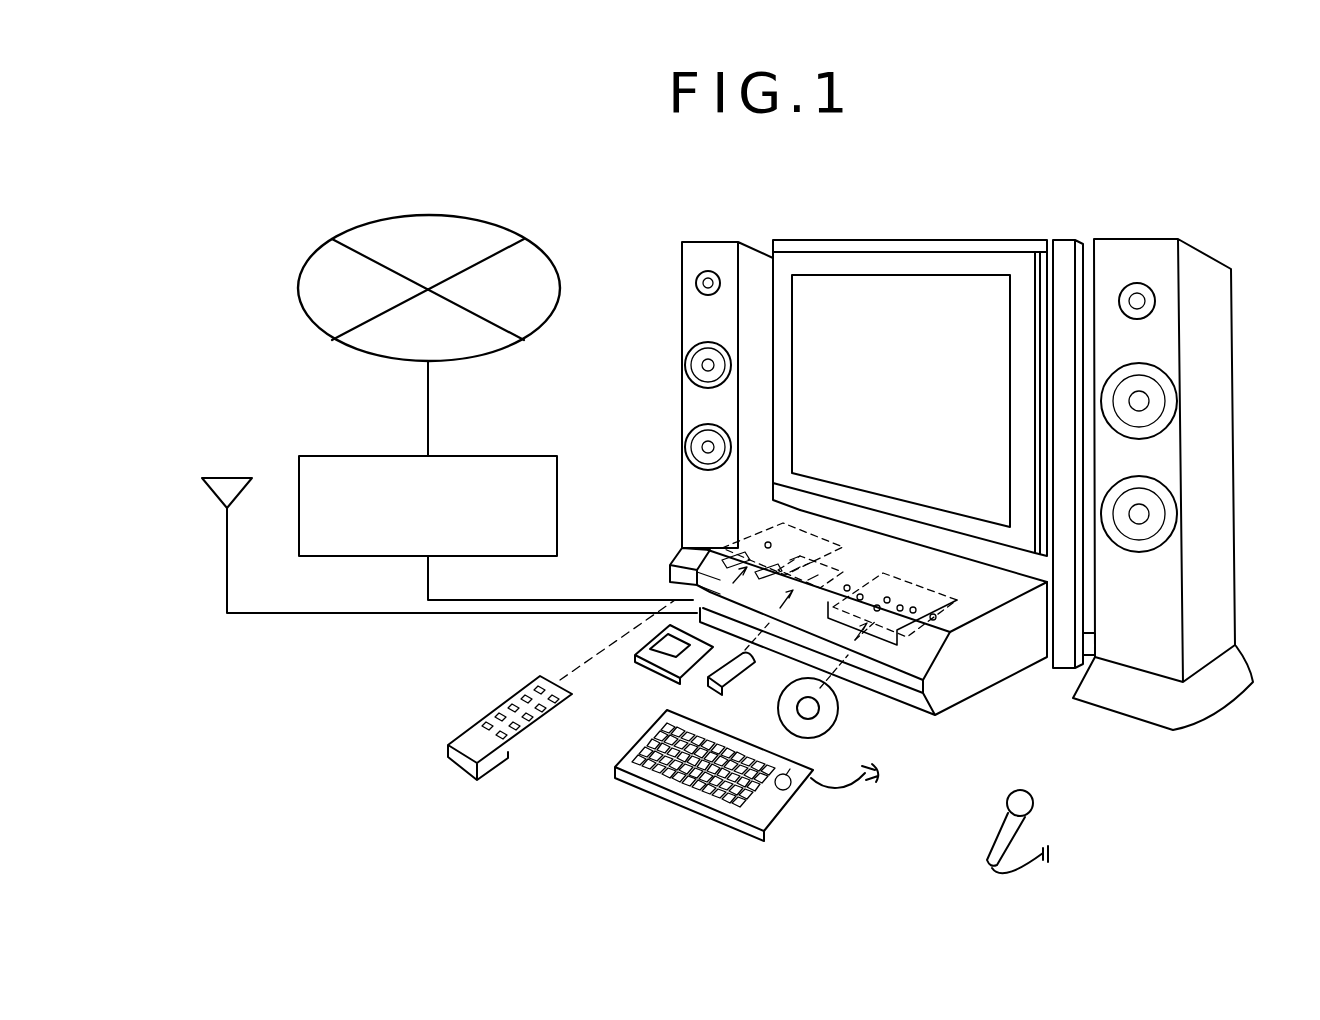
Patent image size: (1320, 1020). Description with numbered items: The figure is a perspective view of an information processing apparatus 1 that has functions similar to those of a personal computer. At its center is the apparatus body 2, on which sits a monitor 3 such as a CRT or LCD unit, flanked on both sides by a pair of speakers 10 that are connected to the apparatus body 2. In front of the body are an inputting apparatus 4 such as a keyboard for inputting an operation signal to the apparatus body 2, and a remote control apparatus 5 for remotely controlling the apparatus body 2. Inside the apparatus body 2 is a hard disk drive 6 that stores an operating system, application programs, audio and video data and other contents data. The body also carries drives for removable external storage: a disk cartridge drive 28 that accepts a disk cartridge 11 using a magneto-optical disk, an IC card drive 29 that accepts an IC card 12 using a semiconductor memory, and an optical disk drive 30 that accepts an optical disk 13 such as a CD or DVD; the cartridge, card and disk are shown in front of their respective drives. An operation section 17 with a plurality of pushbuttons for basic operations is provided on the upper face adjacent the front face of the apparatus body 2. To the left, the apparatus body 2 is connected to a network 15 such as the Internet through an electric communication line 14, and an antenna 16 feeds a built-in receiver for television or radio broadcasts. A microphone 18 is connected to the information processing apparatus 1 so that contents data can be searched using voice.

The information processing apparatus 1 is at (946, 454).
The apparatus body 2 is at (970, 683).
The monitor 3 is at (895, 257).
The inputting apparatus 4 is at (682, 802).
The remote control apparatus 5 is at (475, 728).
The hard disk drive 6 is at (690, 587).
The speakers 10 is at (705, 250).
The disk cartridge 11 is at (647, 668).
The IC card 12 is at (742, 675).
The optical disk 13 is at (836, 723).
The electric communication line 14 is at (512, 456).
The network 15 is at (526, 258).
The antenna 16 is at (237, 478).
The operation section 17 is at (960, 637).
The microphone 18 is at (1013, 832).
The disk cartridge drive 28 is at (820, 537).
The IC card drive 29 is at (840, 558).
The optical disk drive 30 is at (937, 580).